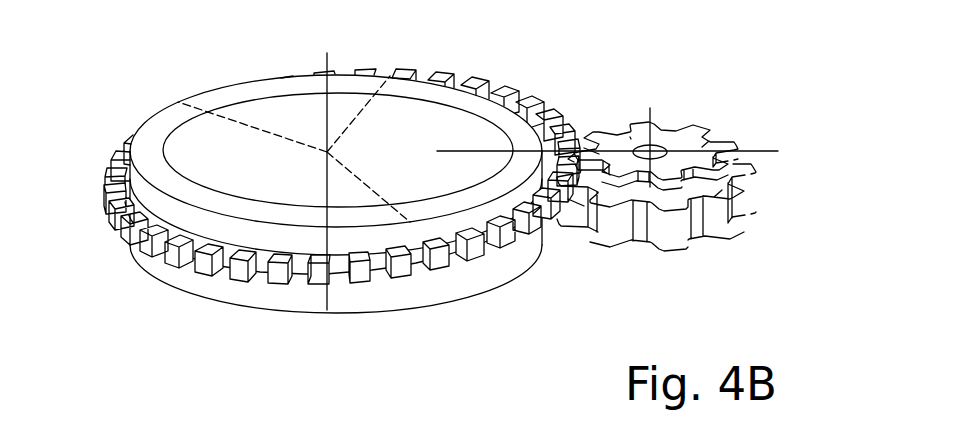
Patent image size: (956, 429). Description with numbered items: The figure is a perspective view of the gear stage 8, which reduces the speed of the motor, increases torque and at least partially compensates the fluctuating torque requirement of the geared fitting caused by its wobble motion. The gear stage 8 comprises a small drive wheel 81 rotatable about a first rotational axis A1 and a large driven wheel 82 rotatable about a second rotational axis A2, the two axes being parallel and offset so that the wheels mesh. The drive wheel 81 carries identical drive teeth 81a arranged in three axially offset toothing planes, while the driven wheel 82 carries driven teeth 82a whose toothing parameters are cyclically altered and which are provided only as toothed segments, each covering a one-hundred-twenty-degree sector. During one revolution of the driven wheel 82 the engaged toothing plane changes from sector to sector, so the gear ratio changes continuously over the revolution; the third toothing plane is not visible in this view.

The gear stage 8 is at (186, 74).
The driven wheel 82 is at (357, 192).
The driven teeth 82a is at (443, 250).
The drive wheel 81 is at (607, 174).
The drive teeth 81a is at (642, 237).
The first rotational axis A1 is at (650, 108).
The second rotational axis A2 is at (327, 53).